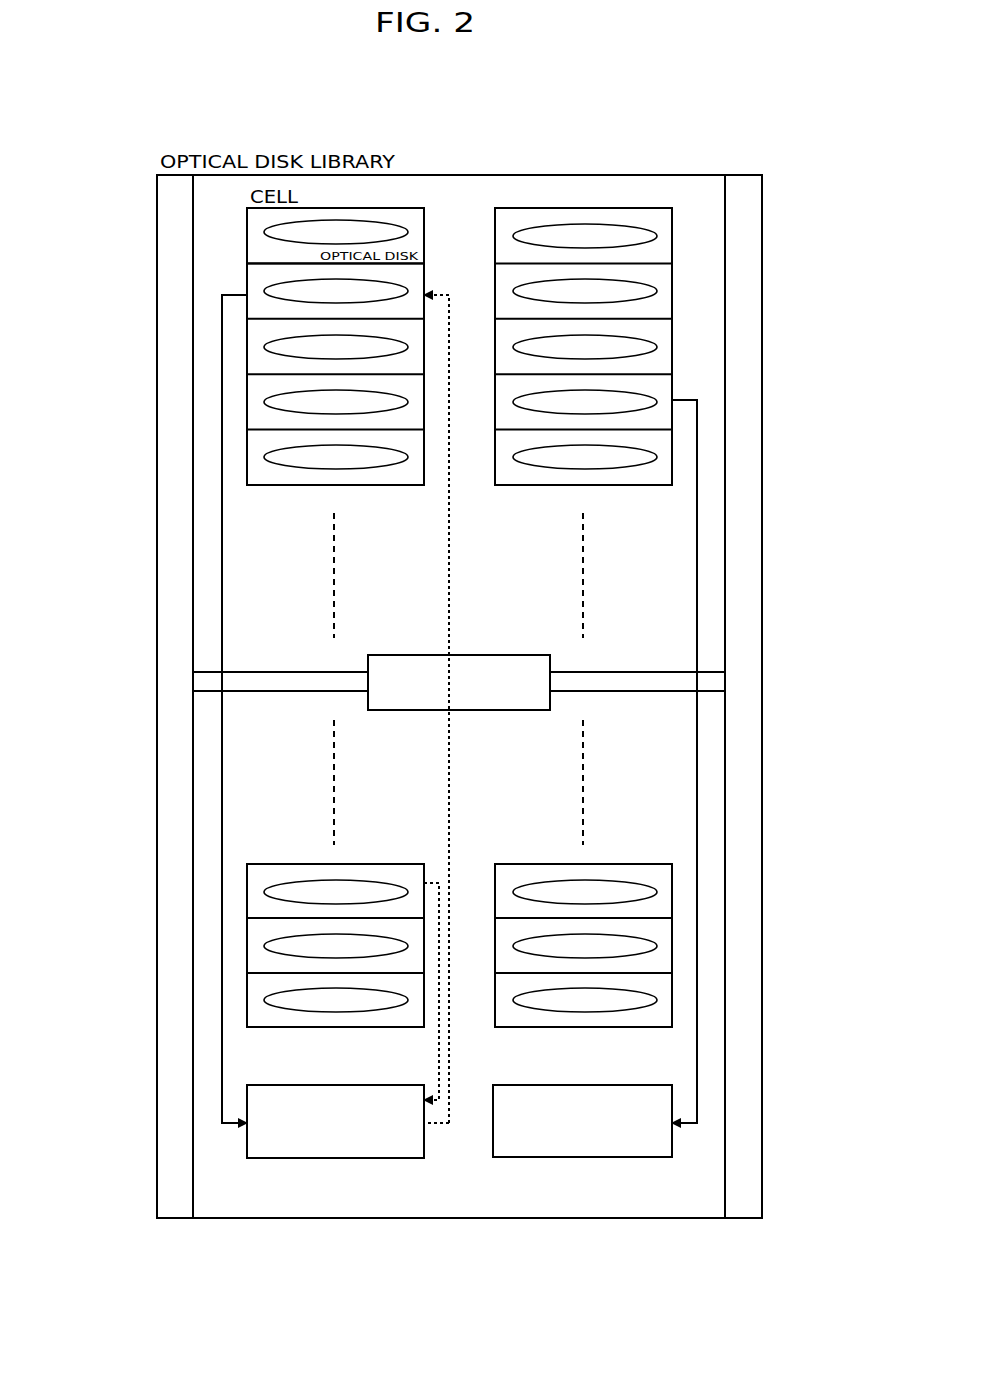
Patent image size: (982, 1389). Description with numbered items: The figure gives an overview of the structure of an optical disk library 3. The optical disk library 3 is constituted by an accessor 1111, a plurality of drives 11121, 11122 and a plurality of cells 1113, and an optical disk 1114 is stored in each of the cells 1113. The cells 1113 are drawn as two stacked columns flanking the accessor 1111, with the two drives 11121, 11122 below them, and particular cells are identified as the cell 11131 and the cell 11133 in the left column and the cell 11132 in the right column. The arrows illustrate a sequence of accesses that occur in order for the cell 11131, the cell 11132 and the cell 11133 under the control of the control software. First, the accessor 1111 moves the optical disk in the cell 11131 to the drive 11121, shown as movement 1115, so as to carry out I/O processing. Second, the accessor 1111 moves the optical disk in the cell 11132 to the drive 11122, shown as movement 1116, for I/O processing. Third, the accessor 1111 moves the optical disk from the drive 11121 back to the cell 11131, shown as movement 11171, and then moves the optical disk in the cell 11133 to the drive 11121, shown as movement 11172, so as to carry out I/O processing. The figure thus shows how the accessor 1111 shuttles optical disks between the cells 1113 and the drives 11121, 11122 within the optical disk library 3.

The optical disk library 3 is at (636, 175).
The cells 1113 is at (393, 208).
The optical disk 1114 is at (410, 232).
The cell 11131 is at (295, 295).
The cell 11132 is at (672, 385).
The cell 11133 is at (247, 880).
The movement of optical disk from cell 11131 to drive 11121 1115 is at (222, 515).
The movement of optical disk from cell 11132 to drive 11122 1116 is at (697, 495).
The accessor 1111 is at (523, 712).
The movement of optical disk from drive 11121 back to cell 11131 11171 is at (449, 1065).
The movement of optical disk from cell 11133 to drive 11121 11172 is at (439, 1045).
The drive 11121 is at (330, 1158).
The drive 11122 is at (575, 1157).